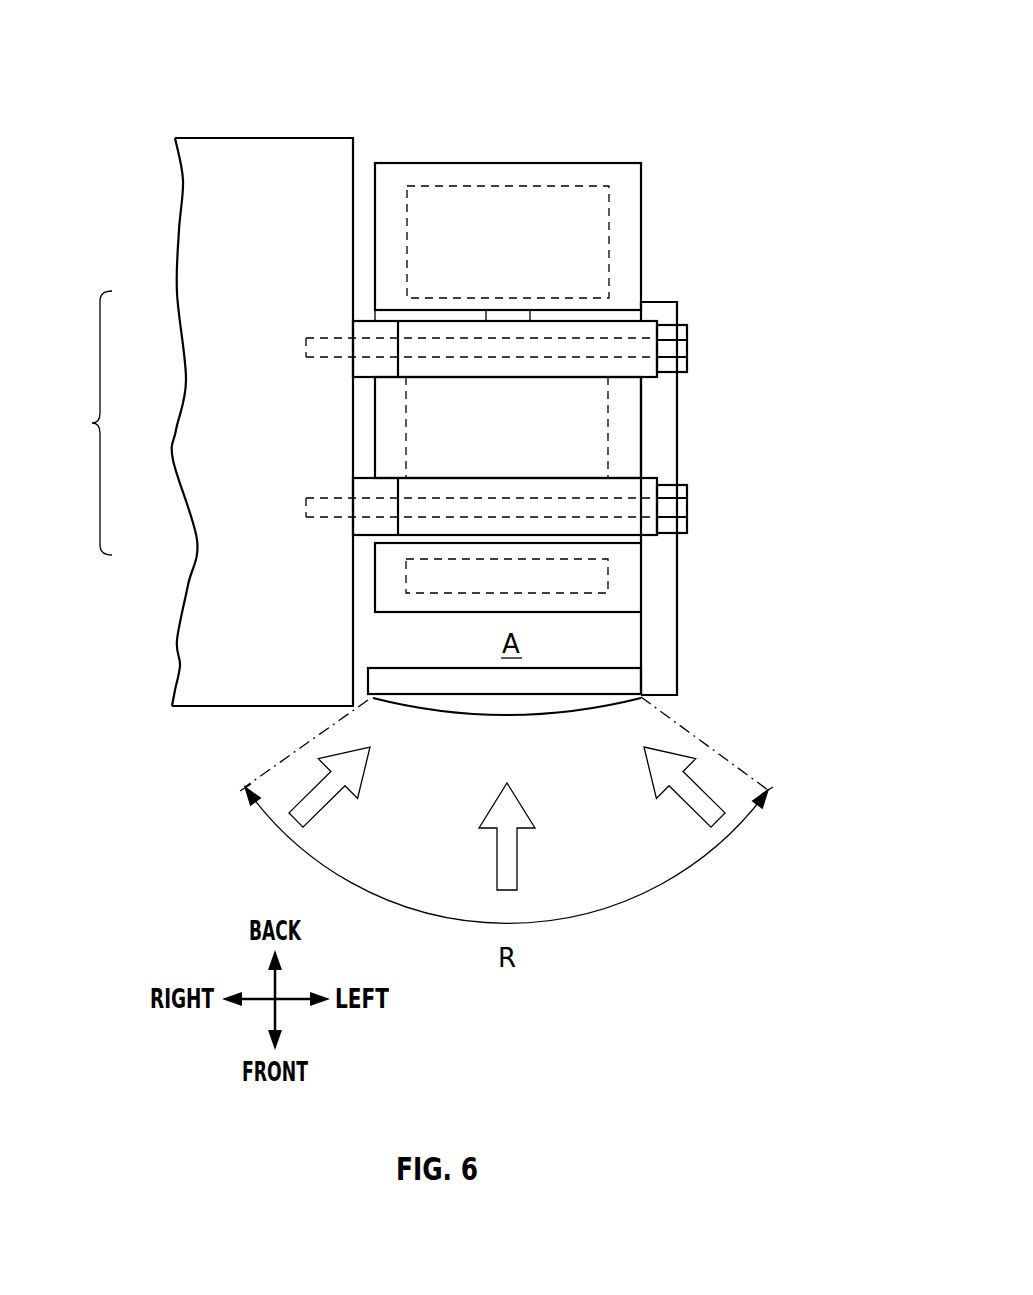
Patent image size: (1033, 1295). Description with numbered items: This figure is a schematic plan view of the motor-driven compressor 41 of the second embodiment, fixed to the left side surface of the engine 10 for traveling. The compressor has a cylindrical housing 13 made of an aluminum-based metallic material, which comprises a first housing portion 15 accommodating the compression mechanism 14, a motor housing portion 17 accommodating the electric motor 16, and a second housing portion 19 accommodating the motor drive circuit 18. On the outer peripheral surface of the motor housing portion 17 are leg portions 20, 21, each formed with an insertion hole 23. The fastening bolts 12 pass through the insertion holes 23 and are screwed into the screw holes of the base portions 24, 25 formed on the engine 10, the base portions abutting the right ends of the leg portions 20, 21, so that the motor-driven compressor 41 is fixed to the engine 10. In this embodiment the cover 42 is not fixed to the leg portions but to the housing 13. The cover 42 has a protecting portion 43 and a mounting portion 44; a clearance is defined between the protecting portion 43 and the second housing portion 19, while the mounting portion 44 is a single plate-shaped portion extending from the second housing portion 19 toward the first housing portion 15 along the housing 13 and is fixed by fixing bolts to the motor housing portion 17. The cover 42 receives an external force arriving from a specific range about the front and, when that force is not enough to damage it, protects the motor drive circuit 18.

The engine 10 is at (231, 137).
The motor-driven compressor 41 is at (665, 146).
The fastening bolt 12 is at (690, 348).
The housing 13 is at (84, 423).
The compression mechanism 14 is at (609, 231).
The first housing portion 15 is at (375, 264).
The electric motor 16 is at (610, 427).
The motor housing portion 17 is at (375, 420).
The motor drive circuit 18 is at (609, 574).
The second housing portion 19 is at (375, 575).
The leg portion 20 is at (575, 320).
The leg portion 21 is at (537, 478).
The insertion hole 23 is at (545, 340).
The base portion 24 is at (388, 320).
The base portion 25 is at (388, 478).
The cover 42 is at (447, 710).
The protecting portion 43 is at (552, 711).
The mounting portion 44 is at (677, 641).